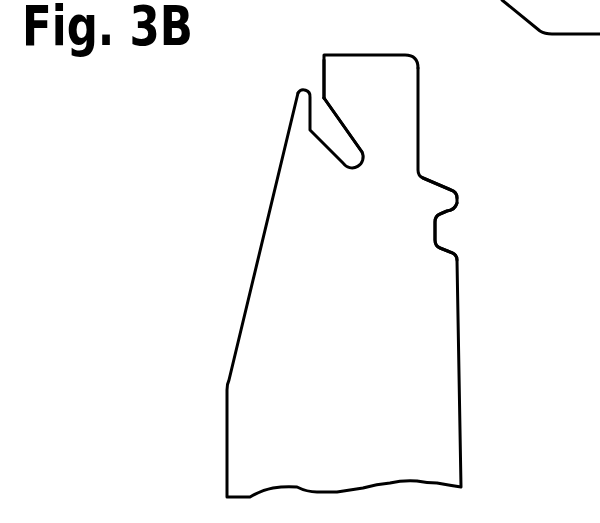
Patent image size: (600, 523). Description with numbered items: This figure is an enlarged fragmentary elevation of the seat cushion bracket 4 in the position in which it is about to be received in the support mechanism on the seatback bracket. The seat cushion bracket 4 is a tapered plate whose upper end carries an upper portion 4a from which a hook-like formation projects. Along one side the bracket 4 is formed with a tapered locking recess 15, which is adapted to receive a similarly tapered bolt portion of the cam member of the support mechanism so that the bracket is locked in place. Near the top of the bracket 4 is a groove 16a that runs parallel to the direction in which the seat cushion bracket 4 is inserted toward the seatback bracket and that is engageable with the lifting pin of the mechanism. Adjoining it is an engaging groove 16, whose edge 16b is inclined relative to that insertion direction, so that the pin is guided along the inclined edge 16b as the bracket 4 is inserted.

The seat cushion bracket 4 is at (248, 302).
The top portion of body member 4a is at (367, 54).
The tapered locking recess 15 is at (447, 219).
The engaging groove 16 is at (344, 130).
The groove 16a is at (324, 71).
The edge 16b is at (335, 115).